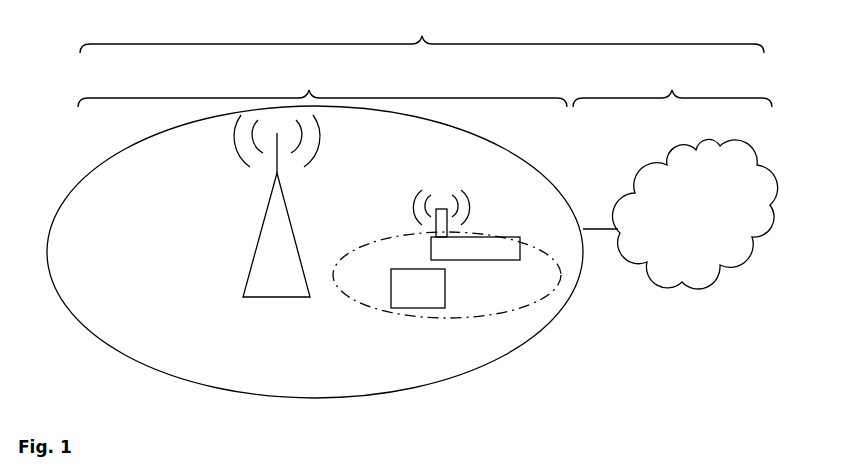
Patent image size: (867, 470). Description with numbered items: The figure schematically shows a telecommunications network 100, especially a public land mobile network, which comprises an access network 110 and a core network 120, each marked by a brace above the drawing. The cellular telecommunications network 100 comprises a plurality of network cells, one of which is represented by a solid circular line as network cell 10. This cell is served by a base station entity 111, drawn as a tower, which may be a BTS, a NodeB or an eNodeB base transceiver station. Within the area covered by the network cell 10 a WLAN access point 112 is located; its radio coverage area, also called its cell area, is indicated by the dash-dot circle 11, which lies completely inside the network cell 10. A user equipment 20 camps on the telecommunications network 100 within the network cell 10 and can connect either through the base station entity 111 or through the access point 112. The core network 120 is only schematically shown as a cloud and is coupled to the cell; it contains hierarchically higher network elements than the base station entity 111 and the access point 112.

The telecommunications network 100 is at (422, 31).
The access network 110 is at (322, 88).
The core network 120 is at (675, 179).
The network cell 10 is at (137, 362).
The base station entity 111 is at (277, 206).
The access point 112 is at (466, 225).
The radio coverage area of the access point 11 is at (472, 316).
The user equipment 20 is at (418, 288).